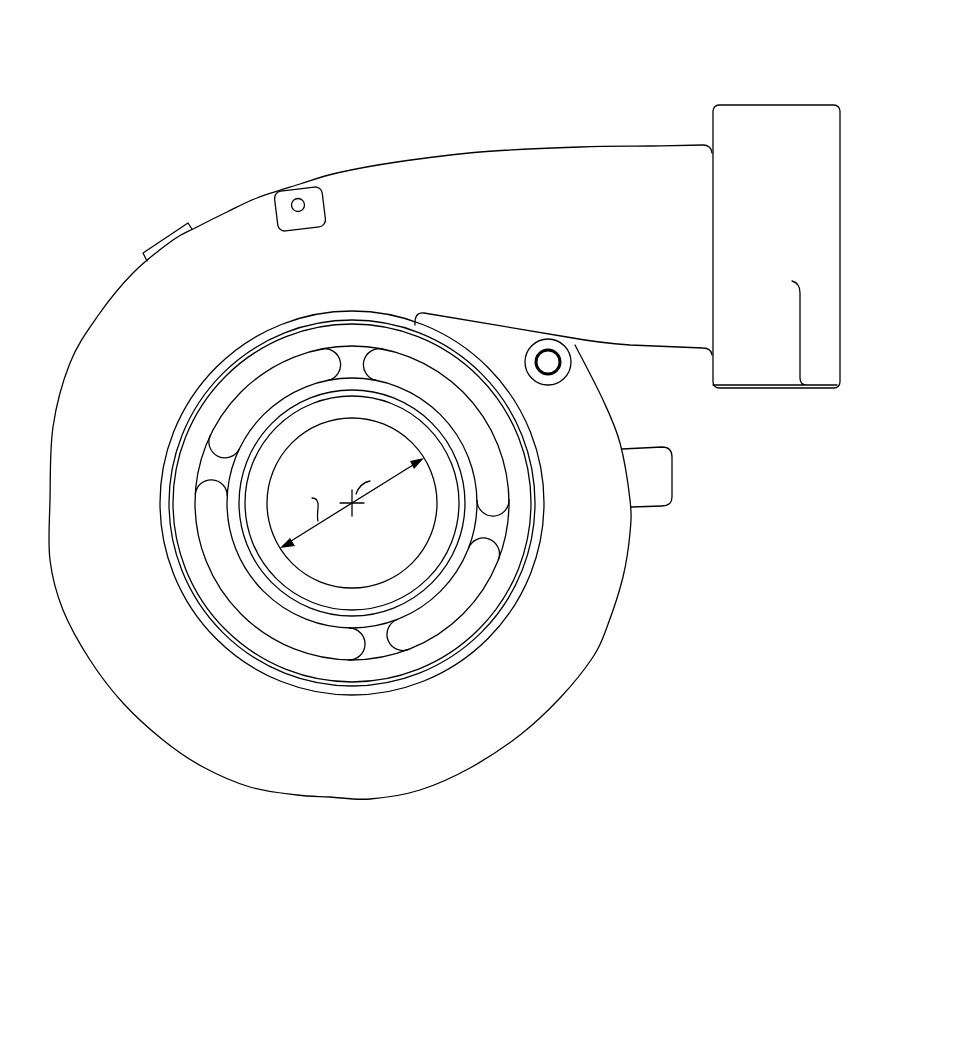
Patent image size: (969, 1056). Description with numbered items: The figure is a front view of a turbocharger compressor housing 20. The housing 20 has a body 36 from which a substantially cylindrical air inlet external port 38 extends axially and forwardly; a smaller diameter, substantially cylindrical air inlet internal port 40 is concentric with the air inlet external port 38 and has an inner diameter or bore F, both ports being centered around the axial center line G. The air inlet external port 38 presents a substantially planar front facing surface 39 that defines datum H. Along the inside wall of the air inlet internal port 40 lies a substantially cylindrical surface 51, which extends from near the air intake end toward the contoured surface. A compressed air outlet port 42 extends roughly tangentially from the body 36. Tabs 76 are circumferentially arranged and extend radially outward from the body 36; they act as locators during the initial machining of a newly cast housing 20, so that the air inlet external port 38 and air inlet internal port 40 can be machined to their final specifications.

The compressor housing 20 is at (252, 102).
The body 36 is at (593, 657).
The air inlet external port 38 is at (318, 577).
The front facing surface 39 is at (450, 663).
The air inlet internal port 40 is at (327, 624).
The compressed air outlet port 42 is at (580, 147).
The cylindrical surface 51 is at (286, 562).
The tabs 76 is at (170, 240).